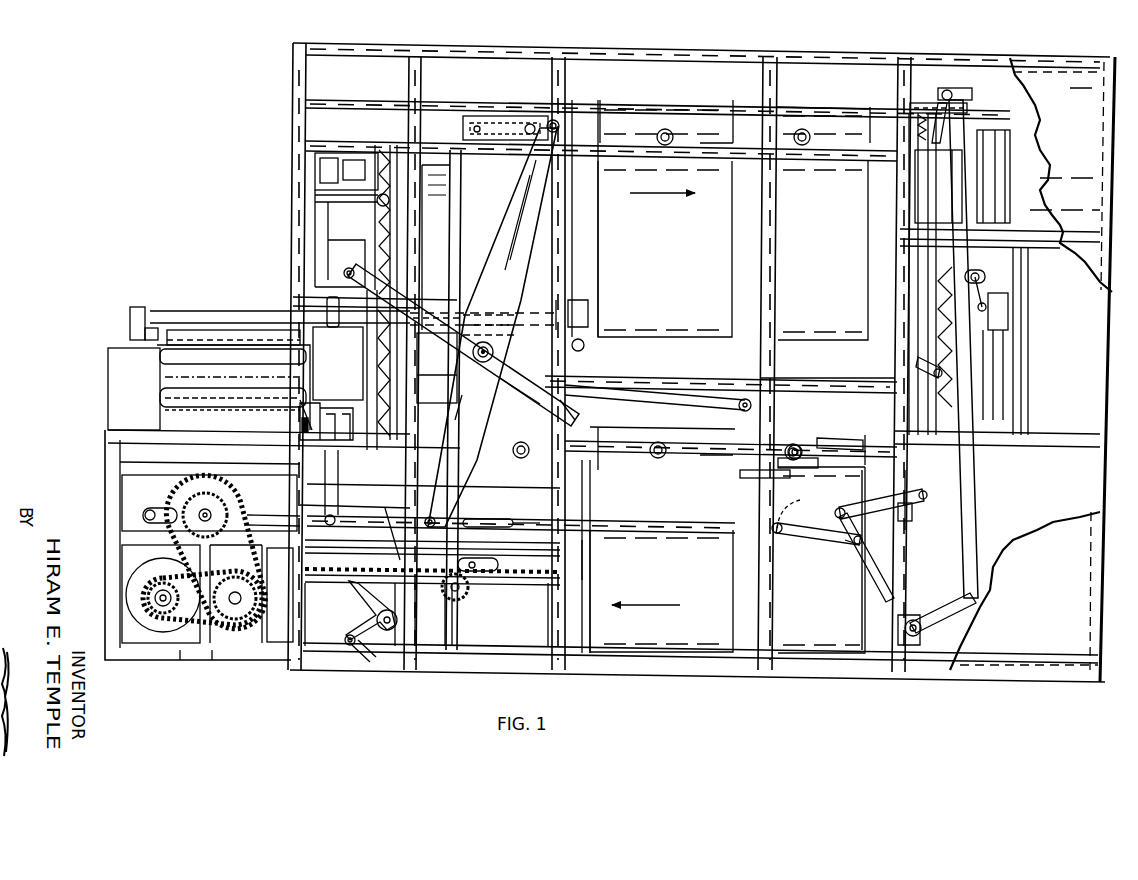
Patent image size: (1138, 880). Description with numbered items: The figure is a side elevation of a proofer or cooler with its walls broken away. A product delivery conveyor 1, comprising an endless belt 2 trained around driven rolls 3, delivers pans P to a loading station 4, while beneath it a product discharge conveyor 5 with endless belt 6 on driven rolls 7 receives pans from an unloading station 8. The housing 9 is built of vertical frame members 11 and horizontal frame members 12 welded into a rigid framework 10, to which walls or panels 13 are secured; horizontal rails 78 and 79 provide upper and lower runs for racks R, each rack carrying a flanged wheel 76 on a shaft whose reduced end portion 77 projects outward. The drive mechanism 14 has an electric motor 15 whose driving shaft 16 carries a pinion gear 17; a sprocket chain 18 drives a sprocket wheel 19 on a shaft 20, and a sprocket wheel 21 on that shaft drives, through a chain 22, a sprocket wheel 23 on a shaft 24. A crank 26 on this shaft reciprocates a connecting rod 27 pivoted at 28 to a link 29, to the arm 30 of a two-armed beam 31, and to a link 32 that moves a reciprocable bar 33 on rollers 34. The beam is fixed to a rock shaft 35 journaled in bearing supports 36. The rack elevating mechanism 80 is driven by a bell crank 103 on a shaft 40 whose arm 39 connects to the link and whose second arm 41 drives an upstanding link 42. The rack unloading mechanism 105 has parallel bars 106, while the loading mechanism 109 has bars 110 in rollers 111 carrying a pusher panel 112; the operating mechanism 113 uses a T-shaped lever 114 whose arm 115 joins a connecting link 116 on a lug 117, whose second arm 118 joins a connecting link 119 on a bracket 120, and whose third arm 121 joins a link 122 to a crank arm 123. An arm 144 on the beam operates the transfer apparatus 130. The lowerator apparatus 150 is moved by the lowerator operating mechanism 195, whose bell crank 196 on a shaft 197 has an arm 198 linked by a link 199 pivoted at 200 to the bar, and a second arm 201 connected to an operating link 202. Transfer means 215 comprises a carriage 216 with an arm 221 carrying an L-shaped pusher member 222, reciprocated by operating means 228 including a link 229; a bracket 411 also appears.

The product delivery conveyor 1 is at (138, 360).
The endless belt 2 is at (240, 330).
The driven rolls 3 is at (320, 93).
The loading station 4 is at (730, 357).
The product discharge conveyor 5 is at (138, 405).
The endless belt 6 is at (212, 406).
The driven rolls 7 is at (178, 408).
The unloading station 8 is at (272, 406).
The housing 9 is at (932, 45).
The framework 10 is at (290, 90).
The vertical frame members 11 is at (420, 88).
The horizontal frame members 12 is at (472, 57).
The walls or panels 13 is at (1083, 193).
The drive mechanism 14 is at (103, 475).
The electric motor 15 is at (155, 572).
The driving shaft 16 is at (172, 598).
The pinion gear 17 is at (160, 610).
The sprocket chain 18 is at (190, 650).
The sprocket wheel 19 is at (212, 650).
The shaft 20 is at (262, 610).
The sprocket wheel 21 is at (262, 566).
The chain 22 is at (228, 480).
The sprocket wheel 23 is at (212, 560).
The shaft 24 is at (200, 480).
The crank 26 is at (160, 500).
The connecting rod 27 is at (270, 515).
The pivot 28 is at (437, 507).
The link 29 is at (390, 523).
The arm 30 is at (478, 450).
The two-armed beam 31 is at (510, 213).
The link 32 is at (472, 518).
The reciprocable bar 33 is at (530, 519).
The rollers 34 is at (920, 548).
The rock shaft 35 is at (507, 354).
The bearing supports 36 is at (520, 348).
The arm 39 is at (332, 518).
The shaft 40 is at (398, 622).
The second arm 41 is at (376, 650).
The upstanding link 42 is at (348, 625).
The flanged wheel 76 is at (668, 130).
The reduced end portion 77 is at (653, 132).
The upper rails 78 is at (702, 143).
The lower rails 79 is at (705, 455).
The rack elevating mechanism 80 is at (308, 237).
The bell crank 103 is at (350, 600).
The rack unloading mechanism 105 is at (650, 378).
The parallel bars 106 is at (822, 378).
The rack loading mechanism 109 is at (535, 310).
The bars 110 is at (470, 290).
The rollers 111 is at (590, 335).
The pusher bar or panel 112 is at (128, 340).
The rack loading and unloading operating mechanism 113 is at (435, 290).
The T-shaped lever 114 is at (530, 400).
The arm 115 is at (550, 417).
The connecting link 116 is at (617, 445).
The lug 117 is at (778, 410).
The second arm 118 is at (436, 365).
The connecting link 119 is at (361, 266).
The bracket 120 is at (340, 278).
The third arm 121 is at (473, 407).
The link 122 is at (470, 465).
The crank arm 123 is at (470, 600).
The transfer apparatus 130 is at (520, 118).
The arm 144 is at (530, 190).
The lowerator apparatus 150 is at (968, 108).
The lowerator operating mechanism 195 is at (982, 508).
The bell crank 196 is at (875, 595).
The shaft 197 is at (925, 636).
The arm 198 is at (862, 570).
The link 199 is at (845, 548).
The pivot 200 is at (782, 518).
The second arm 201 is at (942, 602).
The operating link 202 is at (980, 526).
The transfer means 215 is at (818, 442).
The carriage 216 is at (872, 435).
The arm 221 is at (795, 468).
The L-shaped pusher member 222 is at (740, 478).
The operating means 228 is at (858, 495).
The link 229 is at (903, 512).
The bracket 411 is at (335, 322).
The pans P is at (200, 330).
The racks R is at (688, 85).